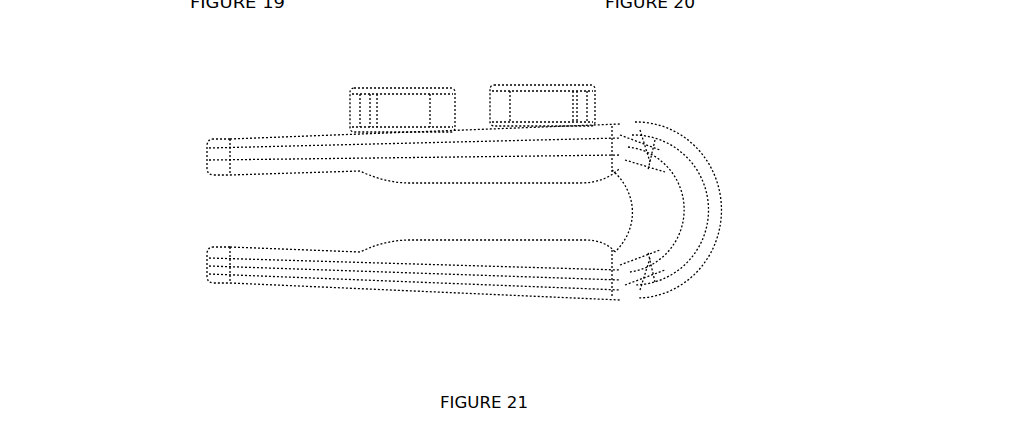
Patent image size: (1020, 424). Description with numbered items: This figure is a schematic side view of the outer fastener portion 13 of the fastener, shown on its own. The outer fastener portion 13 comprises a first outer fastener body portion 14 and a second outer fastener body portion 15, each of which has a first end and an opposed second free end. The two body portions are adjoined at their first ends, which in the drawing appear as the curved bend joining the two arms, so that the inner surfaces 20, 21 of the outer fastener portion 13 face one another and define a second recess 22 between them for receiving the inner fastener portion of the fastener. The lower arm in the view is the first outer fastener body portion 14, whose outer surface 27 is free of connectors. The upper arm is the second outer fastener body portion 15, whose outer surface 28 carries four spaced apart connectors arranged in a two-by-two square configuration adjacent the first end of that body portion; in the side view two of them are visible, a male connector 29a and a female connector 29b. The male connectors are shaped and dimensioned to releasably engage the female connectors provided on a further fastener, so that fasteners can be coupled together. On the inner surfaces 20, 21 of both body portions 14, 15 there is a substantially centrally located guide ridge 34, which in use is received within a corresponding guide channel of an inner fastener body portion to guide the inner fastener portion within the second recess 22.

The outer fastener portion 13 is at (205, 108).
The first outer fastener body portion 14 is at (356, 284).
The second outer fastener body portion 15 is at (345, 123).
The inner surface 20 is at (290, 250).
The inner surface 21 is at (293, 171).
The second recess 22 is at (610, 207).
The outer surface 27 is at (297, 288).
The outer surface 28 is at (317, 134).
The male connector 29a is at (540, 99).
The female connector 29b is at (384, 93).
The guide ridge 34 is at (557, 168).